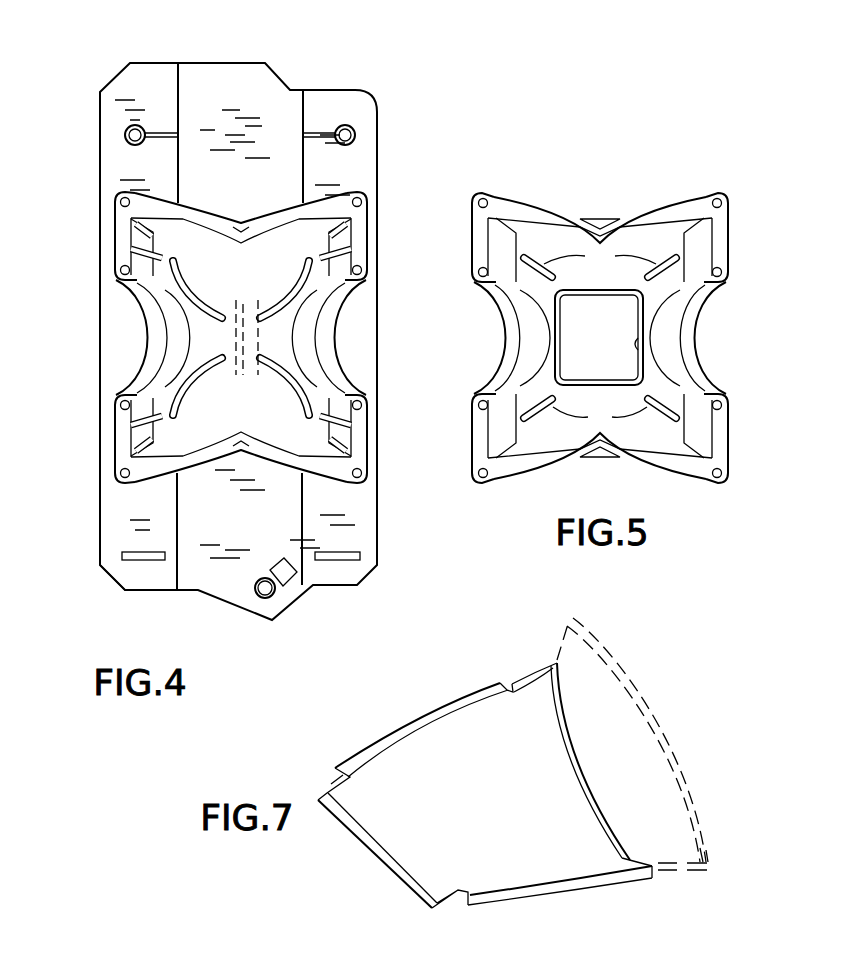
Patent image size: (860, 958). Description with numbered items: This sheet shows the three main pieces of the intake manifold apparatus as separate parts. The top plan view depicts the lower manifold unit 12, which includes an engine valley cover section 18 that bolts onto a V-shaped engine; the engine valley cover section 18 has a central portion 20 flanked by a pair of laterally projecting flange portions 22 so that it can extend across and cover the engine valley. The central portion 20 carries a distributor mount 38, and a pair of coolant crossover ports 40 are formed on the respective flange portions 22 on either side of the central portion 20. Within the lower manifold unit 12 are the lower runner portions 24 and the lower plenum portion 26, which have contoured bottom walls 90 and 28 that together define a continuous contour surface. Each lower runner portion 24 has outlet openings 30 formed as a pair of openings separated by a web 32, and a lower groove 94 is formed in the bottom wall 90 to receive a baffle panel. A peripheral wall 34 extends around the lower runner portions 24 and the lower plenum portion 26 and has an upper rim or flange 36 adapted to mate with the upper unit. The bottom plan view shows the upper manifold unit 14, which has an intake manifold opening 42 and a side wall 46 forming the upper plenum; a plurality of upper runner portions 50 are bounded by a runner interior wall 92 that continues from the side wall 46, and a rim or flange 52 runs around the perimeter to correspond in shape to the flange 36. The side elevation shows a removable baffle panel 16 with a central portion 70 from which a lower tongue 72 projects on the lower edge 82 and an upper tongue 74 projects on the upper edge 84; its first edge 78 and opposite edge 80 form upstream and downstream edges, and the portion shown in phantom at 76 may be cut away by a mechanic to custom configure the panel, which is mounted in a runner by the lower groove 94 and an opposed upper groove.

In FIG. 4, the lower manifold unit 12 is at (403, 40).
In FIG. 5, the upper manifold unit 14 is at (673, 137).
In FIG. 7, the baffle panel 16 is at (330, 720).
In FIG. 4, the engine valley cover section 18 is at (163, 592).
In FIG. 4, the central portion 20 is at (277, 68).
In FIG. 4, the flange portions 22 is at (128, 82).
In FIG. 4, the lower runner portions 24 is at (290, 247).
In FIG. 4, the lower plenum portion 26 is at (117, 392).
In FIG. 4, the bottom wall 28 is at (275, 342).
In FIG. 4, the outlet openings 30 is at (130, 218).
In FIG. 4, the web 32 is at (128, 285).
In FIG. 4, the peripheral wall 34 is at (305, 548).
In FIG. 4, the flange 36 is at (123, 555).
In FIG. 4, the distributor mount 38 is at (268, 598).
In FIG. 4, the coolant crossover ports 40 is at (138, 130).
In FIG. 5, the intake manifold opening 42 is at (586, 350).
In FIG. 5, the side wall 46 is at (637, 352).
In FIG. 5, the upper runner portions 50 is at (555, 231).
In FIG. 5, the flange 52 is at (605, 238).
In FIG. 7, the central portion 70 is at (456, 813).
In FIG. 7, the lower tongue 72 is at (530, 887).
In FIG. 7, the upper tongue 74 is at (443, 700).
In FIG. 7, the phantom portion 76 is at (620, 723).
In FIG. 7, the first edge 78 is at (587, 788).
In FIG. 7, the opposite edge 80 is at (373, 847).
In FIG. 7, the lower edge 82 is at (443, 897).
In FIG. 7, the upper edge 84 is at (533, 677).
In FIG. 4, the bottom wall 90 is at (177, 243).
In FIG. 5, the runner interior wall 92 is at (667, 280).
In FIG. 4, the lower groove 94 is at (282, 262).